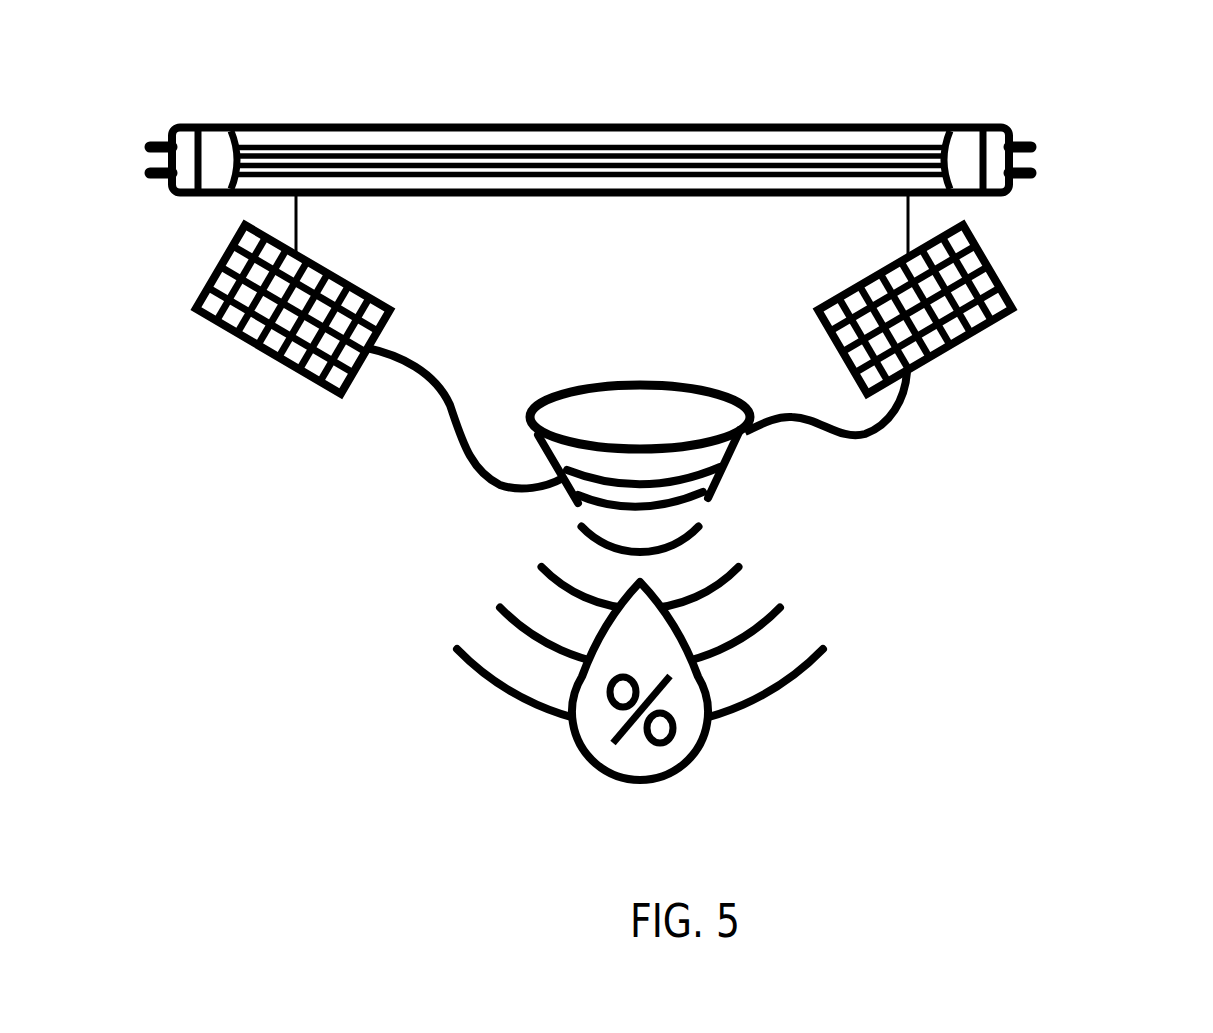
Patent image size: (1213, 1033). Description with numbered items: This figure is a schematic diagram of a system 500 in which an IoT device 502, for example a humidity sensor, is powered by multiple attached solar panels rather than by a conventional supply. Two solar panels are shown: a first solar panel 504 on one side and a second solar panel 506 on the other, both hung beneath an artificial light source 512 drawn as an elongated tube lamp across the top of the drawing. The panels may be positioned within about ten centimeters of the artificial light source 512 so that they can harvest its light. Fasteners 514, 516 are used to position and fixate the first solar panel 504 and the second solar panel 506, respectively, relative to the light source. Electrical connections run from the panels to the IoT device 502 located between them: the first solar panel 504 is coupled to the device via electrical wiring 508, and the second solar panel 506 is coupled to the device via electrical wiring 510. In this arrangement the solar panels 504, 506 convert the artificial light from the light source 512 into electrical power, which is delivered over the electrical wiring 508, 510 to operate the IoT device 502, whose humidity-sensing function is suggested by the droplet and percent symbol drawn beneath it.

The system 500 is at (1104, 86).
The IoT device 502 is at (633, 420).
The first solar panel 504 is at (283, 358).
The second solar panel 506 is at (995, 323).
The electrical wiring 508 is at (507, 482).
The electrical wiring 510 is at (843, 437).
The artificial light source 512 is at (453, 117).
The fastener 514 is at (297, 213).
The fastener 516 is at (907, 215).